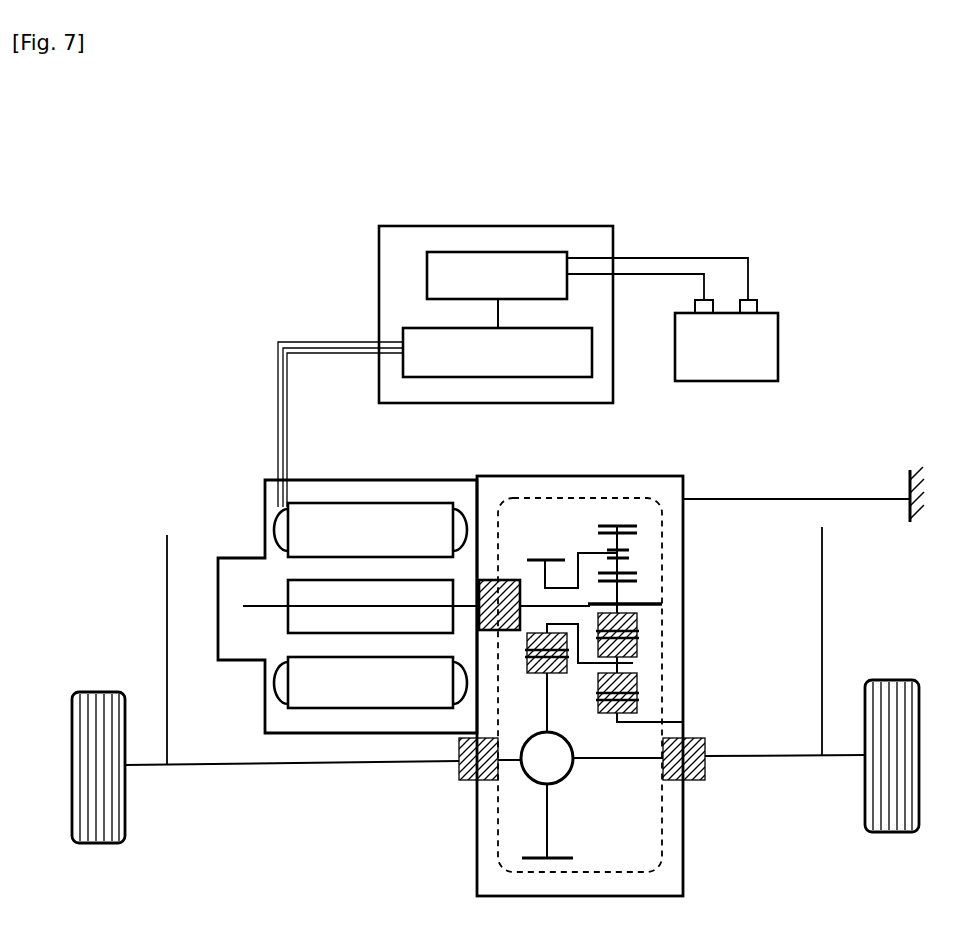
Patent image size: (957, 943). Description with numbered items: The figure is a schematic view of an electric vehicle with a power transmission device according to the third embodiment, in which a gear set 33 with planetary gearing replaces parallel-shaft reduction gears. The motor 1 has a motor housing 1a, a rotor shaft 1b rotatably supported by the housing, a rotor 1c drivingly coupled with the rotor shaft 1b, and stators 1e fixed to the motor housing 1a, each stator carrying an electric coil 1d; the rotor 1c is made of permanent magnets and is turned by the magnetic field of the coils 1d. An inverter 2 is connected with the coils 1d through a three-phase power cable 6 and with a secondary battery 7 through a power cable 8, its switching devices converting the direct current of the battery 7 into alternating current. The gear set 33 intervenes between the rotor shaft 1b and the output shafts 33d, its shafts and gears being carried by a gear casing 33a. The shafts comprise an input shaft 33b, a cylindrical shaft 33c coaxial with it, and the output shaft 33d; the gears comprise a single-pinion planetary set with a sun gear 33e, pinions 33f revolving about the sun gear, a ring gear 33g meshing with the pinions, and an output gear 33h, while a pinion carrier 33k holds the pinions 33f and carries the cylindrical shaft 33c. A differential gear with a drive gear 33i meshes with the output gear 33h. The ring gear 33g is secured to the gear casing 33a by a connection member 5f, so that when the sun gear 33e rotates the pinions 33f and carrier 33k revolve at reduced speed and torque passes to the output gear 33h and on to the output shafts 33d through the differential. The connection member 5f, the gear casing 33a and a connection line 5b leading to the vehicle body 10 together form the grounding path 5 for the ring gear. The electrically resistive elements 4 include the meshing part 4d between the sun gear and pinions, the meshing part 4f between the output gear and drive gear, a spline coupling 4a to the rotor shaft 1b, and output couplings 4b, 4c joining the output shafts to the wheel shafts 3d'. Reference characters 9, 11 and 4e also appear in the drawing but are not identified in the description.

The motor 1 is at (344, 614).
The motor housing 1a is at (340, 480).
The rotor shaft 1b is at (305, 607).
The rotor 1c is at (352, 634).
The electric coil 1d is at (279, 706).
The stator 1e is at (393, 709).
The inverter 2 is at (536, 226).
The three-phase power cable 6 is at (336, 339).
The secondary battery 7 is at (784, 340).
The power cable 8 is at (673, 255).
The wheel 9 is at (106, 692).
The body 10 is at (910, 487).
The vehicle frame 11 is at (167, 586).
The gear set 33 is at (591, 669).
The gear casing 33a is at (505, 476).
The input shaft 33b is at (590, 599).
The cylindrical shaft 33c is at (590, 553).
The output shaft 33d is at (513, 763).
The sun gear 33e is at (631, 585).
The pinions 33f is at (638, 653).
The ring gear 33g is at (638, 708).
The output gear 33h is at (530, 556).
The drive gear 33i is at (563, 860).
The pinion carrier 33k is at (631, 557).
The electrically resistive elements 4 is at (626, 681).
The spline coupling 4a is at (483, 580).
The output coupling 4b is at (457, 780).
The output coupling 4c is at (702, 776).
The meshing part 4d is at (638, 615).
The gear connecting member 4e is at (590, 689).
The meshing part 4f is at (528, 676).
The grounding path 5 is at (763, 582).
The connection line 5b is at (780, 500).
The connection member 5f is at (653, 726).
The wheel shaft 3d' is at (495, 792).